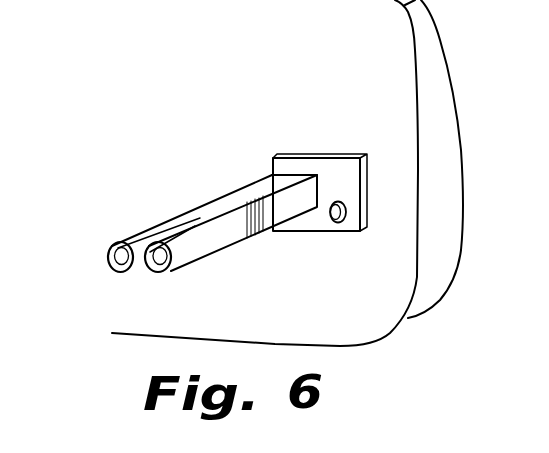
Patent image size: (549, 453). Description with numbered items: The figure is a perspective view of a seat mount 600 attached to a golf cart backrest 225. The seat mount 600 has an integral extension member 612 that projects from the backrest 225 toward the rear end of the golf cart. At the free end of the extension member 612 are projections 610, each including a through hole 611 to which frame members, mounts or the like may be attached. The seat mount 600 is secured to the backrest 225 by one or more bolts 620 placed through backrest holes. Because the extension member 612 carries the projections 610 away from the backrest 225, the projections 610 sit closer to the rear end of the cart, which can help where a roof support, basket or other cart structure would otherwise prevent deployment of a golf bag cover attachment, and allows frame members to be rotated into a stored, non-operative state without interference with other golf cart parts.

The golf cart backrest 225 is at (318, 43).
The seat mount 600 is at (233, 146).
The projections 610 is at (147, 274).
The through holes 611 is at (122, 258).
The integral extension member 612 is at (235, 228).
The bolts 620 is at (343, 221).